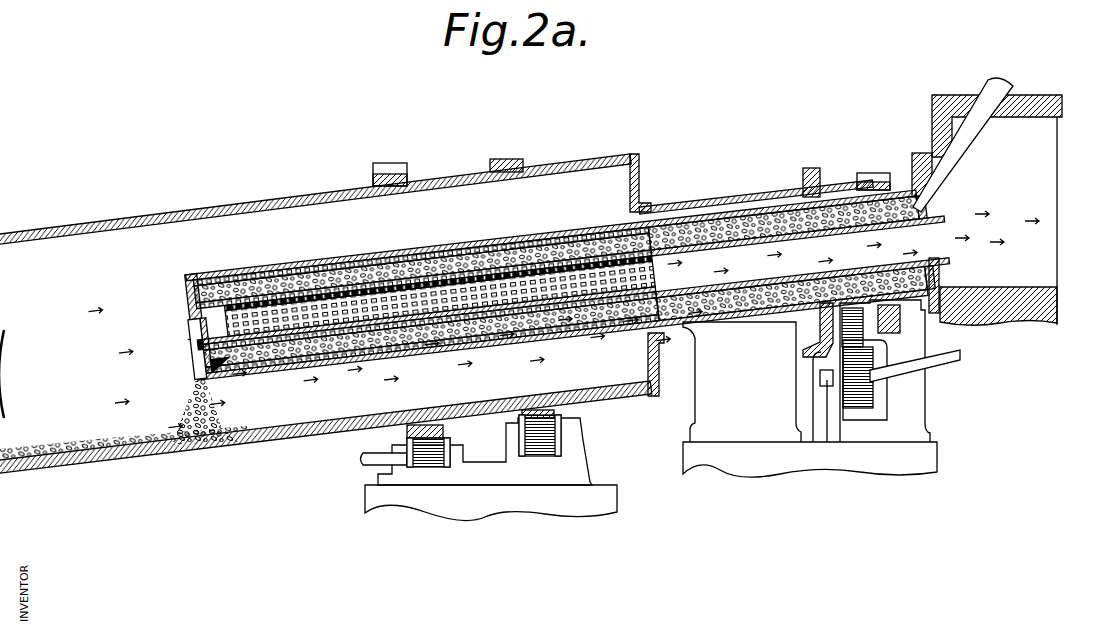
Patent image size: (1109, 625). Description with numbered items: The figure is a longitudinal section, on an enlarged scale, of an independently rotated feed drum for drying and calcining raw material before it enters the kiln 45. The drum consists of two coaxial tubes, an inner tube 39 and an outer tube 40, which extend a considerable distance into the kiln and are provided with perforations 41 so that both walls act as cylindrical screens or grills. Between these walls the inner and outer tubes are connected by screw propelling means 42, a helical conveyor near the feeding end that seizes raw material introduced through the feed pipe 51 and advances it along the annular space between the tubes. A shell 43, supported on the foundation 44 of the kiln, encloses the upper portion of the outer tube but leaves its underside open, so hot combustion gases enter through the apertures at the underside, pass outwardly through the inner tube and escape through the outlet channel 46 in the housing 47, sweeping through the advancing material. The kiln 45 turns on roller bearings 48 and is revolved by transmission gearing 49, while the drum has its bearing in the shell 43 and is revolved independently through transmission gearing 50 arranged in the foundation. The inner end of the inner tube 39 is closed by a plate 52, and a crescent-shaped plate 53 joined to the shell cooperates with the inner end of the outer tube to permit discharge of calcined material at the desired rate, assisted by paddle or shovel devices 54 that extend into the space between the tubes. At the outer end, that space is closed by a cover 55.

The inner tube 39 is at (566, 237).
The outer tube 40 is at (488, 240).
The perforations 41 is at (392, 260).
The screw propelling means 42 is at (739, 274).
The shell 43 is at (278, 266).
The foundation 44 is at (755, 382).
The kiln 45 is at (215, 205).
The outlet channel 46 is at (998, 221).
The housing 47 is at (1041, 98).
The roller bearings 48 is at (548, 456).
The transmission gearing 49 is at (434, 450).
The transmission gearing 50 is at (820, 353).
The feed pipe 51 is at (986, 92).
The plate 52 is at (190, 332).
The crescent-shaped plate 53 is at (183, 298).
The paddle or shovel devices 54 is at (200, 358).
The cover 55 is at (940, 275).